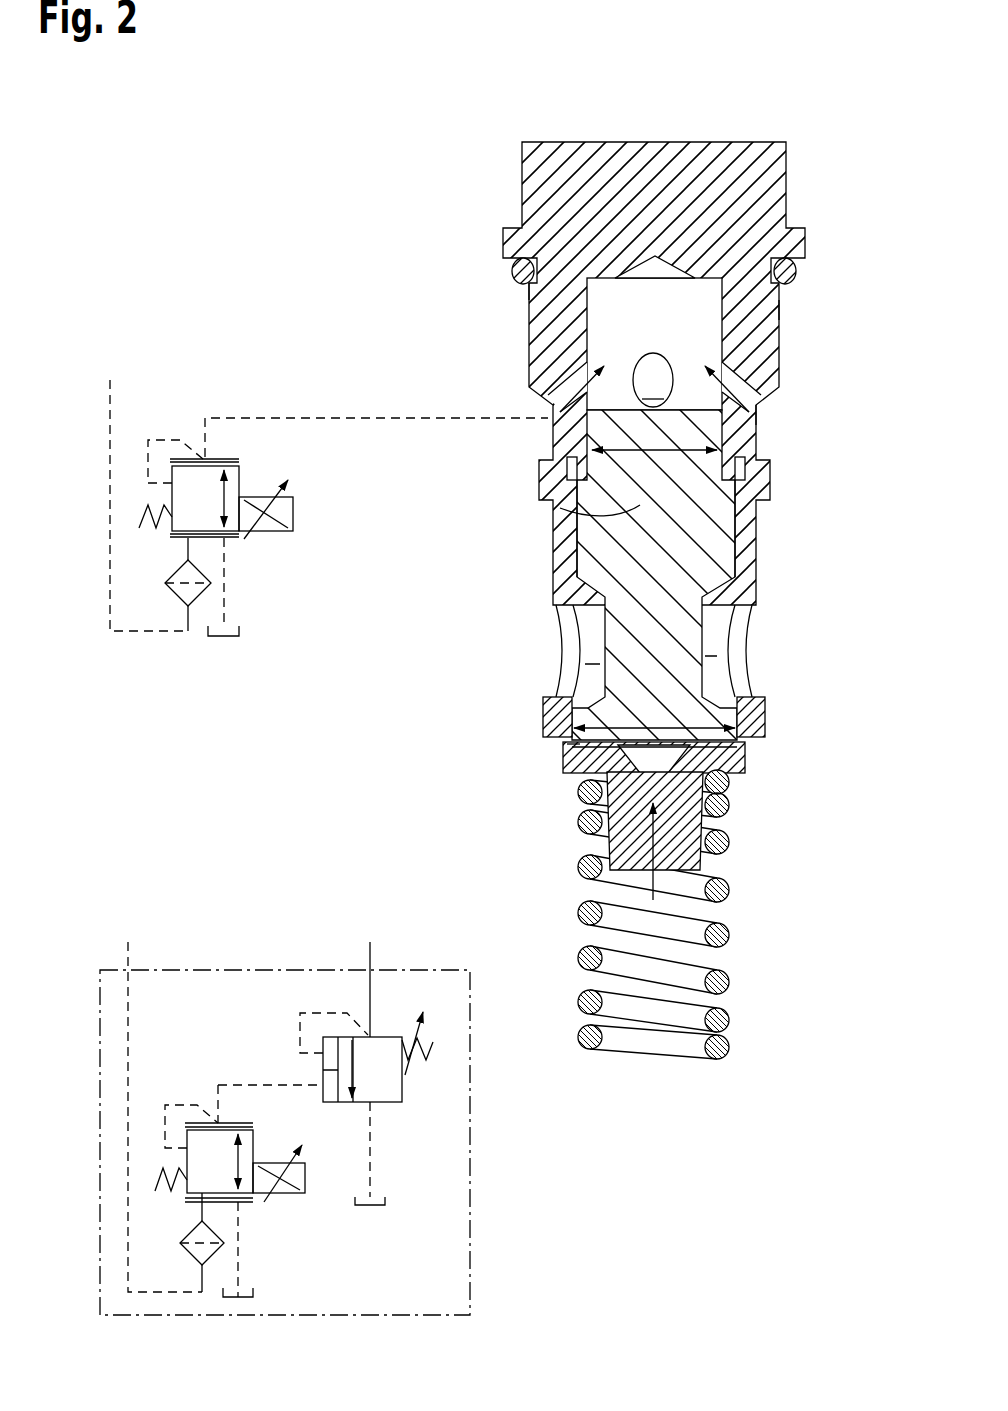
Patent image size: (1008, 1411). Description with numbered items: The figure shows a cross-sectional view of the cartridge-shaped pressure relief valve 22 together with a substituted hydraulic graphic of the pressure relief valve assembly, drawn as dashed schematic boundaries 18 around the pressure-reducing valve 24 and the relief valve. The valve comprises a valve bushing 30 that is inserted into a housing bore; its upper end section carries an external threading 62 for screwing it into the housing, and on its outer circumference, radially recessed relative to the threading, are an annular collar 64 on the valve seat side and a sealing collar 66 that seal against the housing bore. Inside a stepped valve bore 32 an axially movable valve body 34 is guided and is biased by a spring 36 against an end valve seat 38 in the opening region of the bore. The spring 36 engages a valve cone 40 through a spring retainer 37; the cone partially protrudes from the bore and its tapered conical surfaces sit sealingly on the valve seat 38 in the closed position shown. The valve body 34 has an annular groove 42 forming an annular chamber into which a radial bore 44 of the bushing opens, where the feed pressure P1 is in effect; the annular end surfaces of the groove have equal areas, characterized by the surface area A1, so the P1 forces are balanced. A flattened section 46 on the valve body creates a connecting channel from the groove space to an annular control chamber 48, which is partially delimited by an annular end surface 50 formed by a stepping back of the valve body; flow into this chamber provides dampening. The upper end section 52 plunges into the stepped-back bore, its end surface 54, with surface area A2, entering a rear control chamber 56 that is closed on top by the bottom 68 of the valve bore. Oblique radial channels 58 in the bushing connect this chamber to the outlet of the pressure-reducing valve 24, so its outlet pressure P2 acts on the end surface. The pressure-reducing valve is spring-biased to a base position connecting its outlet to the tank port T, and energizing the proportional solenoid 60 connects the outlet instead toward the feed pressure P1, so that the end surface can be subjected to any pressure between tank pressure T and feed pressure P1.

The hydraulic system 18 is at (110, 400).
The pressure relief valve 22 is at (543, 680).
The pressure-reducing valve 24 is at (210, 492).
The valve bushing 30 is at (787, 199).
The valve bore 32 is at (737, 504).
The valve body 34 is at (665, 536).
The spring 36 is at (735, 813).
The spring retainer 37 is at (675, 822).
The valve seat 38 is at (752, 710).
The valve cone 40 is at (551, 713).
The annular groove 42 is at (585, 630).
The radial bore 44 is at (735, 641).
The flattened section 46 is at (557, 528).
The annular control chamber 48 is at (763, 472).
The annular end surface 50 is at (557, 427).
The end section 52 is at (754, 431).
The end surface 54 is at (760, 380).
The control chamber 56 is at (768, 321).
The oblique radial channels 58 is at (547, 391).
The proportional solenoid 60 is at (262, 498).
The external threading 62 is at (525, 288).
The annular collar 64 is at (766, 735).
The sealing collar 66 is at (541, 487).
The bottom 68 is at (531, 304).
The feed pressure P1 is at (585, 664).
The outlet pressure P2 is at (670, 328).
The surface area A1 is at (567, 748).
The surface area A2 is at (660, 452).
The tank port T is at (593, 851).